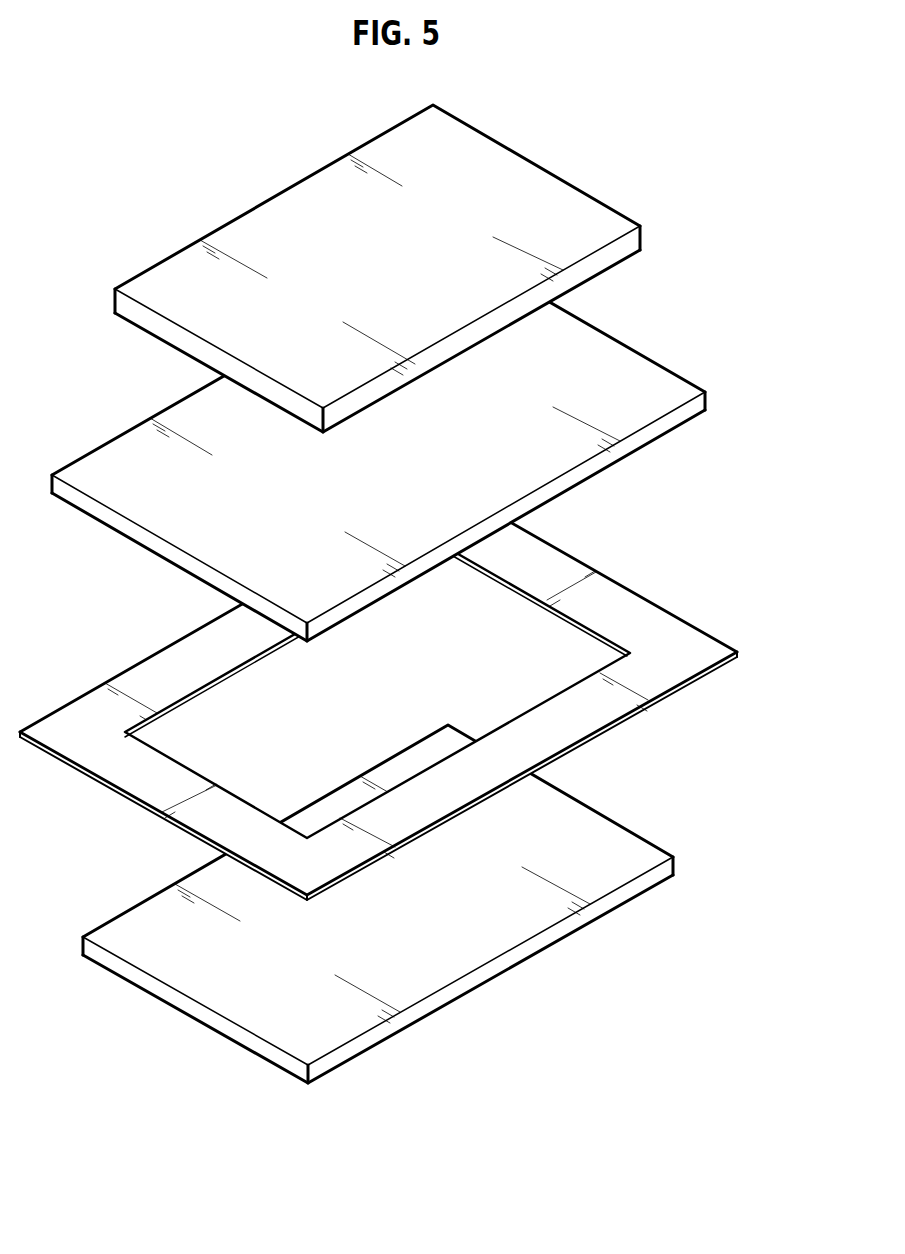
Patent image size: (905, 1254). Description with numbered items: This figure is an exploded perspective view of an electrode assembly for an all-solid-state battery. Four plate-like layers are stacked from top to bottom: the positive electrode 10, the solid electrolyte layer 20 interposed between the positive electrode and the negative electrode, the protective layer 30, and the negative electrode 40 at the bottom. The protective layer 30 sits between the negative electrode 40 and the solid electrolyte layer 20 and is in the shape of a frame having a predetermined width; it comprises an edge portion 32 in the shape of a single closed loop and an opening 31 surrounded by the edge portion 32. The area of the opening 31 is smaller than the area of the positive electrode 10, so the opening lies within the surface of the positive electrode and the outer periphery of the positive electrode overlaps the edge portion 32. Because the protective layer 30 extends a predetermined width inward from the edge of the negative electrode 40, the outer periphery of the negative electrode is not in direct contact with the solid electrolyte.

The positive electrode 10 is at (562, 192).
The solid electrolyte layer 20 is at (625, 357).
The protective layer 30 is at (716, 617).
The opening 31 is at (583, 648).
The edge portion 32 is at (657, 617).
The negative electrode 40 is at (595, 820).